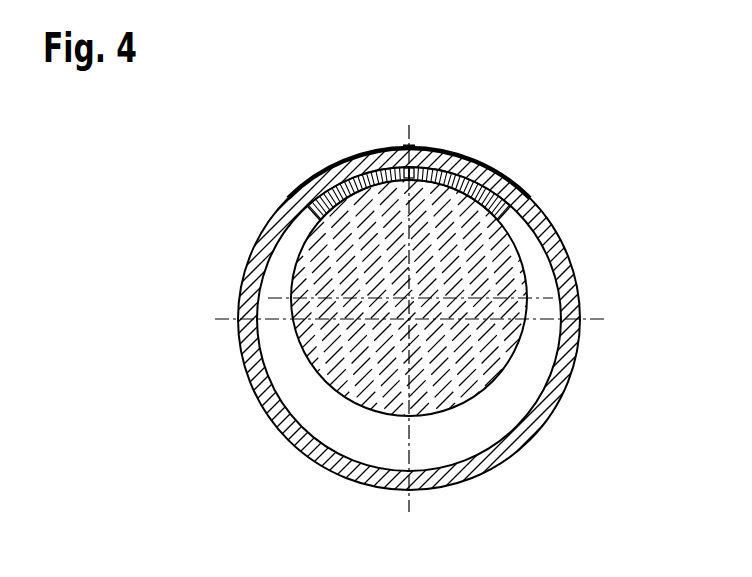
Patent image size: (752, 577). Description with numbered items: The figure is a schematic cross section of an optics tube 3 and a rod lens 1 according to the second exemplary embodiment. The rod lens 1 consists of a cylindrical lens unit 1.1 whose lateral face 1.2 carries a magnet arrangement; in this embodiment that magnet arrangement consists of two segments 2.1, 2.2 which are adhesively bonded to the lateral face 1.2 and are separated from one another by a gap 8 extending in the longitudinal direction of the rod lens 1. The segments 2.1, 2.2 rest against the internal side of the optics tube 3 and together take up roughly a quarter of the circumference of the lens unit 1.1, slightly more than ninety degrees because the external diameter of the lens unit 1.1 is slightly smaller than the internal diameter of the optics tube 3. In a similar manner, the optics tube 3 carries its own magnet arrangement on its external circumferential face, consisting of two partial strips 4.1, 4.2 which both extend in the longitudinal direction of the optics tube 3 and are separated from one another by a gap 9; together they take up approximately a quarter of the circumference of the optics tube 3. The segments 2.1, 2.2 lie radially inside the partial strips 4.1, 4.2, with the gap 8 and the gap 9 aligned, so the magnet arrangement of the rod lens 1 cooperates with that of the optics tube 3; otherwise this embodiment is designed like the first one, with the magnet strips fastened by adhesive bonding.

The rod lens 1 is at (512, 382).
The cylindrical lens unit 1.1 is at (457, 387).
The lateral face 1.2 is at (530, 279).
The segment 2.1 is at (288, 192).
The segment 2.2 is at (537, 196).
The optics tube 3 is at (250, 293).
The partial strip 4.1 is at (306, 196).
The partial strip 4.2 is at (521, 195).
The gap 8 is at (417, 152).
The gap 9 is at (404, 148).